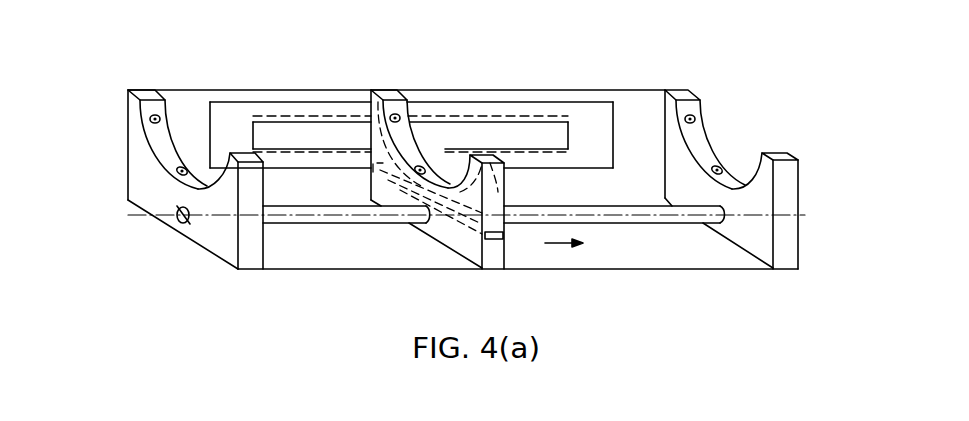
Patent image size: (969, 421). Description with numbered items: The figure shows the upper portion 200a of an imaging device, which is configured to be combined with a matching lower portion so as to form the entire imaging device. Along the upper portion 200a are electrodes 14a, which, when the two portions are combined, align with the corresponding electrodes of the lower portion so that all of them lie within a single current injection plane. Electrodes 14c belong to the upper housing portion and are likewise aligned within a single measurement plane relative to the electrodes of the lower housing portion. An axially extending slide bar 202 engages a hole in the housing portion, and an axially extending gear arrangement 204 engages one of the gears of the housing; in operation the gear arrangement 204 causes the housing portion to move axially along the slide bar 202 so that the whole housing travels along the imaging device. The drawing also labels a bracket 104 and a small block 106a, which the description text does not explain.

The upper portion 200a is at (771, 121).
The gear arrangement 204 is at (303, 117).
The center clamp bracket 104 is at (400, 148).
The electrode 14a is at (160, 173).
The electrode 14c is at (667, 90).
The slide bar 202 is at (635, 214).
The stop block 106a is at (490, 242).